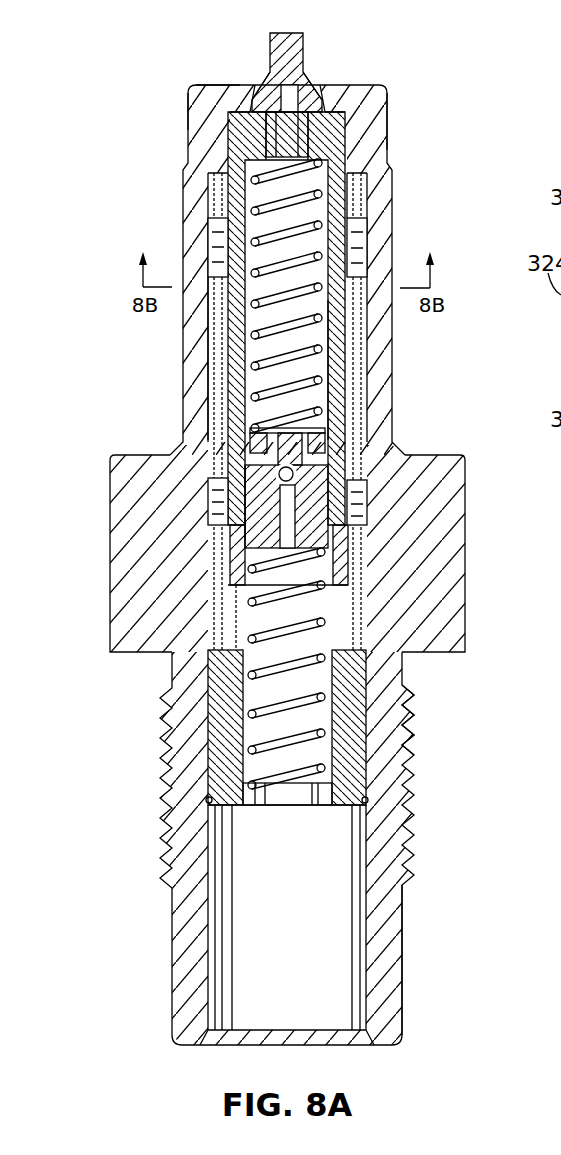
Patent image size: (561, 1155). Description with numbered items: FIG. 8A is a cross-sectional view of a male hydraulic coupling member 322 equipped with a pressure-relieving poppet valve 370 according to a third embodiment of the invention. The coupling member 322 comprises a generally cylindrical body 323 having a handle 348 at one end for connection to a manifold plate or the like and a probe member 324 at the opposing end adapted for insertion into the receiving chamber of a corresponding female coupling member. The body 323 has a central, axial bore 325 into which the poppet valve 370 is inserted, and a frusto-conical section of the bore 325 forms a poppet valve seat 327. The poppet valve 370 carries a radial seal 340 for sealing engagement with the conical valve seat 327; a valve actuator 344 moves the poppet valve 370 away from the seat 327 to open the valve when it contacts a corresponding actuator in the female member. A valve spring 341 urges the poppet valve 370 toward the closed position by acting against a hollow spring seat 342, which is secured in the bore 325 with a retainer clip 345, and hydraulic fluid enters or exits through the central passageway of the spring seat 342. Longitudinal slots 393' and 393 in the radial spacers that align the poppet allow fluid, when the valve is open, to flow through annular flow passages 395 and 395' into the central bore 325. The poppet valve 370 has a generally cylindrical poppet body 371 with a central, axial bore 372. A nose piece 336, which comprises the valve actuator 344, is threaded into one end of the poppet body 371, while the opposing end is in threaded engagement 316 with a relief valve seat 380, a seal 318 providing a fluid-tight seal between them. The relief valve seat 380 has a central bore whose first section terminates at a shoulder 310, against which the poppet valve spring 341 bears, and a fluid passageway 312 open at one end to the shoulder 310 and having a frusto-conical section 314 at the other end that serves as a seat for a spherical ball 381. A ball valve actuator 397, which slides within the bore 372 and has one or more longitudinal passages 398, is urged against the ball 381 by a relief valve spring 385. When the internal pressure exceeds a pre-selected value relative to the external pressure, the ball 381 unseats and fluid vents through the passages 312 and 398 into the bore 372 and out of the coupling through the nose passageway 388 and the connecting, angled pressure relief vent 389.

The shoulder 310 is at (245, 555).
The fluid passageway 312 is at (296, 515).
The frusto-conical section 314 is at (245, 478).
The threaded engagement 316 is at (245, 500).
The seal 318 is at (245, 522).
The male hydraulic coupling member 322 is at (172, 92).
The body 323 is at (125, 600).
The probe member 324 is at (387, 205).
The central bore 325 is at (268, 925).
The poppet valve seat 327 is at (266, 140).
The nose piece 336 is at (190, 98).
The radial seal 340 is at (388, 96).
The valve spring 341 is at (405, 682).
The hollow spring seat 342 is at (385, 733).
The valve actuator 344 is at (305, 50).
The retainer clip 345 is at (368, 800).
The handle 348 is at (403, 920).
The pressure-relieving poppet valve 370 is at (232, 156).
The poppet body 371 is at (340, 372).
The central bore 372 is at (252, 350).
The relief valve seat 380 is at (332, 562).
The spherical ball 381 is at (279, 470).
The relief valve spring 385 is at (330, 345).
The nose passageway 388 is at (266, 72).
The pressure relief vent 389 is at (308, 78).
The longitudinal slots 393 is at (286, 243).
The longitudinal slots 393' is at (378, 495).
The annular flow passage 395 is at (153, 358).
The annular flow passage 395' is at (418, 194).
The ball valve actuator 397 is at (262, 448).
The longitudinal passages 398 is at (322, 452).